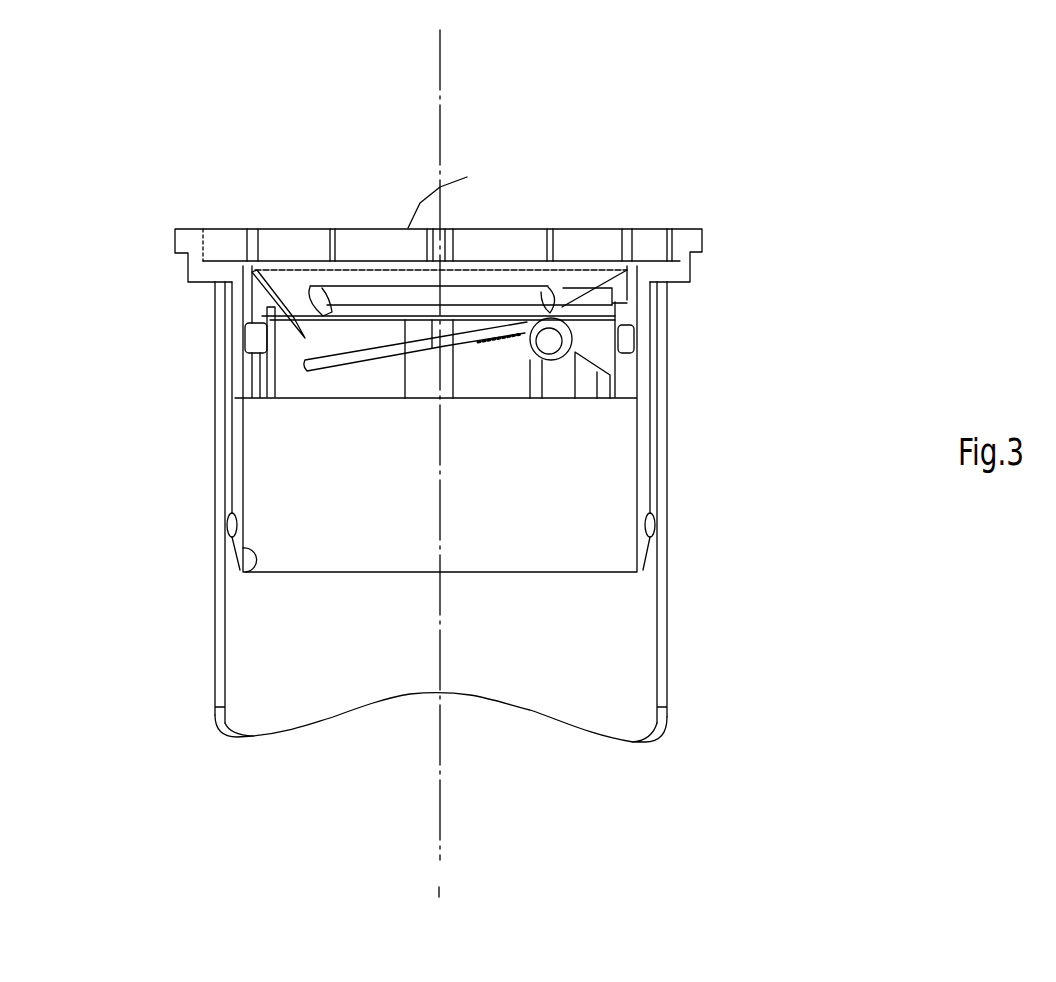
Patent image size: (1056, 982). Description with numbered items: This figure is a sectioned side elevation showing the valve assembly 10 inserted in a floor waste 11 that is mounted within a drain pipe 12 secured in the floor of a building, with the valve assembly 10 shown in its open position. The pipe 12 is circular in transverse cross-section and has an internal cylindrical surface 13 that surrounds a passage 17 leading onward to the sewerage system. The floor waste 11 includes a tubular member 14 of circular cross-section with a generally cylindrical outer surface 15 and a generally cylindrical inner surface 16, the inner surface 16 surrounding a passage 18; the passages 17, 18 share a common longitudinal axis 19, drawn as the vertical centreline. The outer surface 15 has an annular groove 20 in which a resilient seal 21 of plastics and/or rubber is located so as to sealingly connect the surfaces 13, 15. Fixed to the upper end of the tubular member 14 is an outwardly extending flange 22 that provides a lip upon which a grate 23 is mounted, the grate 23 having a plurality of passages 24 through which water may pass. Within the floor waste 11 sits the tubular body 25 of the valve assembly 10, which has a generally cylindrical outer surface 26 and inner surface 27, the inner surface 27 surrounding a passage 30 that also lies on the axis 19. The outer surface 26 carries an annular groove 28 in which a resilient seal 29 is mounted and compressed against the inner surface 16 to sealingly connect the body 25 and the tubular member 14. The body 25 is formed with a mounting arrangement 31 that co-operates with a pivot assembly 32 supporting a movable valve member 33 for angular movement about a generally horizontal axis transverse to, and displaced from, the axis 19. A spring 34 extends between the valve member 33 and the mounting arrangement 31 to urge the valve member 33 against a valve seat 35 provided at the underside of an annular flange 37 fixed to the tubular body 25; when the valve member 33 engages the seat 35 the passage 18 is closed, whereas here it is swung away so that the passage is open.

The valve assembly 10 is at (290, 460).
The floor waste 11 is at (669, 212).
The drain pipe 12 is at (676, 474).
The internal cylindrical surface 13 is at (667, 641).
The tubular member 14 is at (218, 386).
The outer surface 15 is at (232, 458).
The inner surface 16 is at (248, 567).
The passage 17 is at (530, 648).
The passage 18 is at (530, 536).
The longitudinal axis 19 is at (440, 832).
The annular groove 20 is at (240, 527).
The seal 21 is at (657, 523).
The outwardly extending flange 22 is at (692, 253).
The grate 23 is at (327, 229).
The passages 24 is at (479, 230).
The tubular body 25 is at (643, 293).
The outer surface 26 is at (630, 367).
The inner surface 27 is at (278, 350).
The annular groove 28 is at (268, 310).
The seal 29 is at (627, 338).
The passage 30 is at (397, 393).
The mounting arrangement 31 is at (576, 410).
The pivot assembly 32 is at (545, 385).
The movable valve member 33 is at (352, 364).
The spring 34 is at (510, 348).
The valve seat 35 is at (300, 337).
The annular flange 37 is at (590, 264).